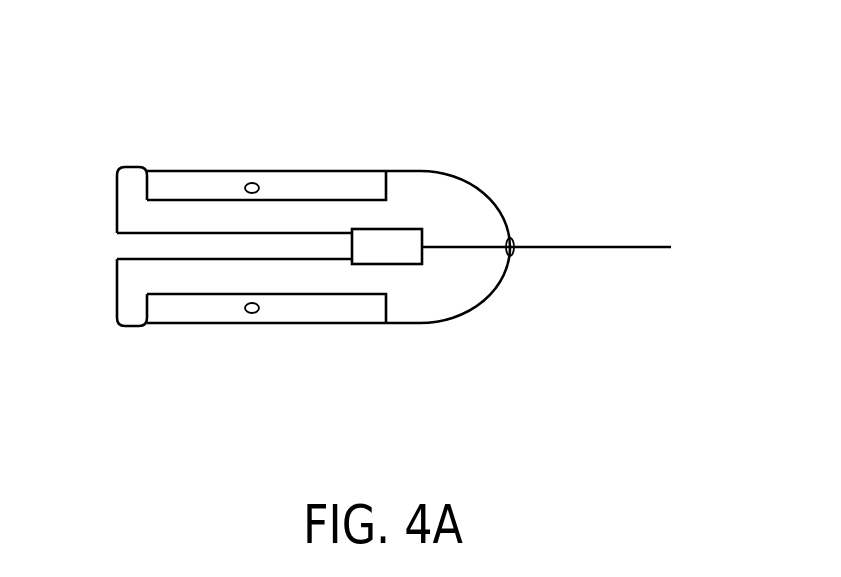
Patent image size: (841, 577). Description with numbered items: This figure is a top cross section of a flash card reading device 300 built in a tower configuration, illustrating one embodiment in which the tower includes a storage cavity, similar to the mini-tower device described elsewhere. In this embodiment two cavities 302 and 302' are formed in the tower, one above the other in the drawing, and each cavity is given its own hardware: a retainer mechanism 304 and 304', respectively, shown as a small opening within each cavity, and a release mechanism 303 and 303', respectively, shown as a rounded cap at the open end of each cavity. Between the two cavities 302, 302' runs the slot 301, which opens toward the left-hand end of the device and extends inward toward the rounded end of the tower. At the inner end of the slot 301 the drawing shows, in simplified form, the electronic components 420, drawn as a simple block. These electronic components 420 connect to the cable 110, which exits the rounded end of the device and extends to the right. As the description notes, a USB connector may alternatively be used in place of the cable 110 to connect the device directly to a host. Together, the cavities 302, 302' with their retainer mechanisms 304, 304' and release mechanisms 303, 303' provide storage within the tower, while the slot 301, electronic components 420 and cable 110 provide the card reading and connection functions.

The probe head assembly 300 is at (449, 170).
The slot 301 is at (123, 242).
The cavity 302 is at (272, 133).
The cavity 302' is at (266, 366).
The release mechanism 303 is at (112, 123).
The release mechanism 303' is at (107, 366).
The retainer mechanism 304 is at (228, 119).
The retainer mechanism 304' is at (216, 370).
The electronic components 420 is at (400, 240).
The cable 110 is at (643, 244).